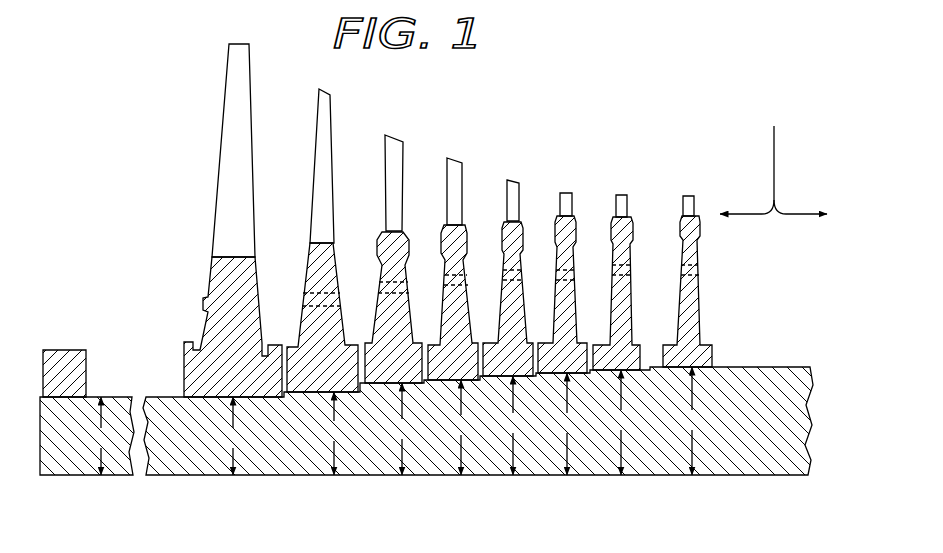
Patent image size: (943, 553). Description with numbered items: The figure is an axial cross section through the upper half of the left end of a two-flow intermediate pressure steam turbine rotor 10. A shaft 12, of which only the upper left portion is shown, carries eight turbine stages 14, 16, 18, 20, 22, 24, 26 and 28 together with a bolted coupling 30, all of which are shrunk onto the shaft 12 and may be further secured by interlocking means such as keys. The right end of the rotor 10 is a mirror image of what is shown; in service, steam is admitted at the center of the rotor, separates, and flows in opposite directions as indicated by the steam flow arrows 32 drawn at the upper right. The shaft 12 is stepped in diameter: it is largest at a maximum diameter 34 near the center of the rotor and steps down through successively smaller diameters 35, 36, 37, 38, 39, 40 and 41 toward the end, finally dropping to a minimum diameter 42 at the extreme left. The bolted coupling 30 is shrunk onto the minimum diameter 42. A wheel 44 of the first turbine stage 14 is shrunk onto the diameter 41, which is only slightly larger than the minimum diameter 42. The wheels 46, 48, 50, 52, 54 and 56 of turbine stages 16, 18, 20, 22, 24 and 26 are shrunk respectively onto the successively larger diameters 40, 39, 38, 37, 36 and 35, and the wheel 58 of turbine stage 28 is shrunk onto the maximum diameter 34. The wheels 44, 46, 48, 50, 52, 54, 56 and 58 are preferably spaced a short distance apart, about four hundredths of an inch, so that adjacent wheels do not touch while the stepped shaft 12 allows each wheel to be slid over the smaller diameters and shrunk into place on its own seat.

The two-flow intermediate pressure steam turbine rotor 10 is at (232, 490).
The shaft 12 is at (733, 458).
The turbine stage 14 is at (223, 220).
The turbine stage 16 is at (312, 240).
The turbine stage 18 is at (382, 259).
The turbine stage 20 is at (444, 269).
The turbine stage 22 is at (501, 278).
The turbine stage 24 is at (556, 280).
The turbine stage 26 is at (611, 281).
The turbine stage 28 is at (678, 281).
The bolted coupling 30 is at (68, 350).
The steam flow arrows 32 is at (774, 176).
The maximum diameter 34 is at (692, 421).
The diameter 35 is at (621, 422).
The diameter 36 is at (567, 424).
The diameter 37 is at (513, 425).
The diameter 38 is at (461, 427).
The diameter 39 is at (402, 429).
The diameter 40 is at (334, 433).
The diameter 41 is at (233, 436).
The minimum diameter 42 is at (101, 436).
The wheel 44 is at (205, 327).
The wheel 46 is at (303, 323).
The wheel 48 is at (376, 327).
The wheel 50 is at (443, 319).
The wheel 52 is at (500, 320).
The wheel 54 is at (555, 323).
The wheel 56 is at (610, 326).
The wheel 58 is at (681, 328).